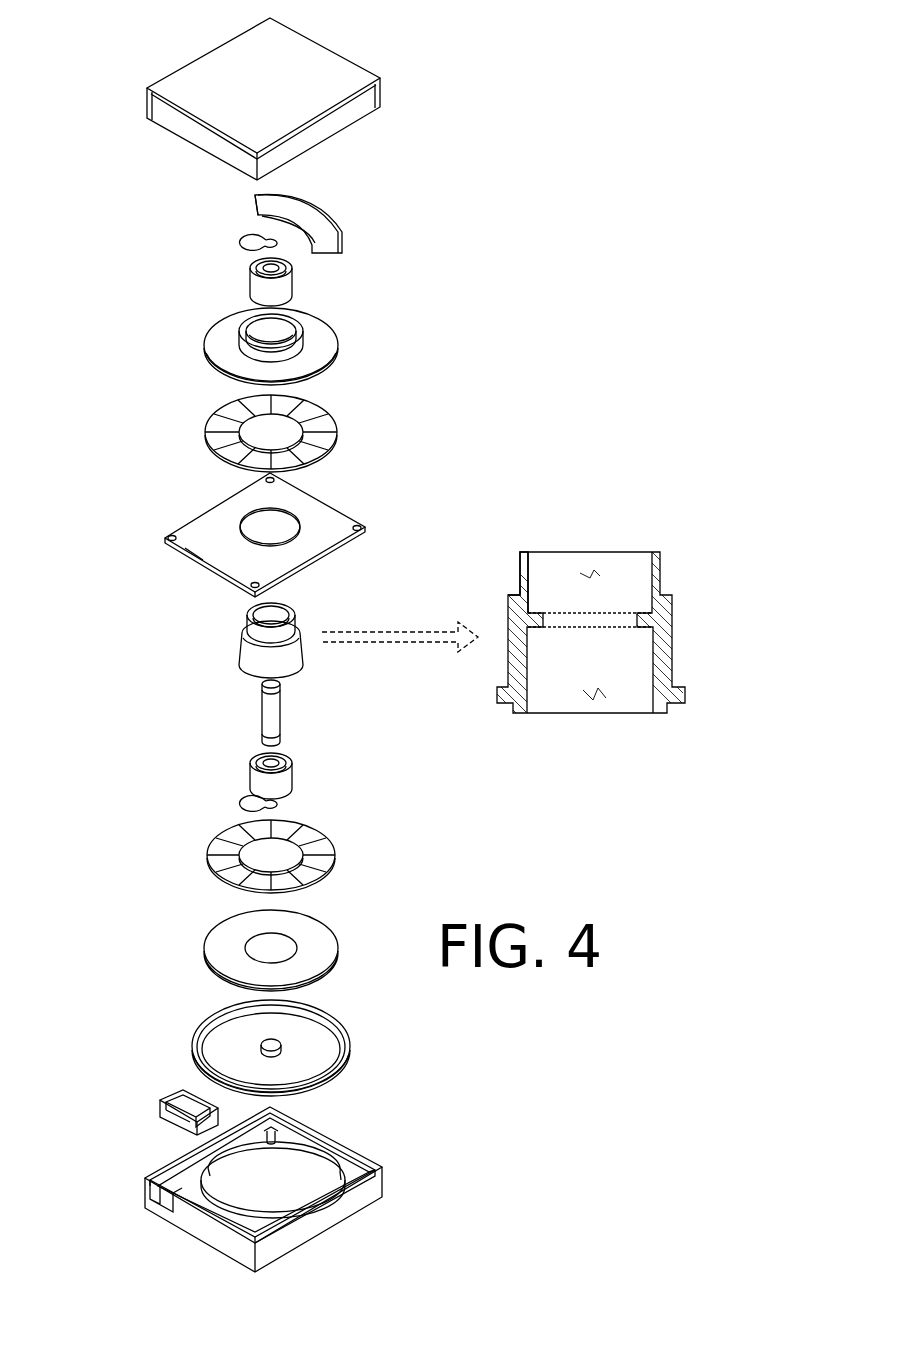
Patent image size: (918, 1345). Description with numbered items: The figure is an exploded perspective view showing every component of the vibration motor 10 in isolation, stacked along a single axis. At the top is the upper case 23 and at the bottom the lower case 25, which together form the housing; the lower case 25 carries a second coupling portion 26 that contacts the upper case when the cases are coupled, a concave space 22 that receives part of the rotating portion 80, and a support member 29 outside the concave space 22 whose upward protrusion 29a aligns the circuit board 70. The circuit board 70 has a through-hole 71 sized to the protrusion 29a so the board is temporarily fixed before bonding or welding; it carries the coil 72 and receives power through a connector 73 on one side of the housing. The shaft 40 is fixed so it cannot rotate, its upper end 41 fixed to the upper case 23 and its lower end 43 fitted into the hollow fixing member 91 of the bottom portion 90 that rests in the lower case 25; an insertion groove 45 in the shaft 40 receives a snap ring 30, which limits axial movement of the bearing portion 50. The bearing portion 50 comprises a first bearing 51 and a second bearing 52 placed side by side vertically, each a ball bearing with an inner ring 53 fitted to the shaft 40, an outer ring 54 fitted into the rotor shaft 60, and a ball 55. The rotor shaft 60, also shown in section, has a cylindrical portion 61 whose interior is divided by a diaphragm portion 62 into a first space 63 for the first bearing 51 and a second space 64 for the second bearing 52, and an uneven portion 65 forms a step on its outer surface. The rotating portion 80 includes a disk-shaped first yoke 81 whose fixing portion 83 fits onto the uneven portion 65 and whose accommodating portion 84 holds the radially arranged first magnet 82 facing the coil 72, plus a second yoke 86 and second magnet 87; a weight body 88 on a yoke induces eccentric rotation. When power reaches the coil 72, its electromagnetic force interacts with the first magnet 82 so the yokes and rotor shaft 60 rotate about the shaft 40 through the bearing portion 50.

The vibration motor 10 is at (118, 38).
The concave space 22 is at (285, 1175).
The upper case 23 is at (345, 70).
The lower case 25 is at (250, 1182).
The second coupling portion 26 is at (374, 1176).
The support member 29 is at (178, 1183).
The protrusion 29a is at (275, 1135).
The snap ring 30 is at (262, 243).
The shaft 40 is at (259, 716).
The upper end 41 is at (280, 688).
The lower end 43 is at (281, 740).
The insertion groove 45 is at (283, 734).
The bearing portion 50 is at (252, 512).
The first bearing 51 is at (252, 281).
The second bearing 52 is at (258, 780).
The inner ring 53 is at (262, 266).
The outer ring 54 is at (258, 290).
The ball 55 is at (286, 268).
The rotor shaft 60 is at (412, 633).
The cylindrical portion 61 is at (515, 650).
The diaphragm portion 62 is at (540, 613).
The first space 63 is at (590, 575).
The second space 64 is at (588, 695).
The uneven portion 65 is at (510, 600).
The circuit board 70 is at (257, 538).
The through-hole 71 is at (158, 553).
The coil 72 is at (330, 513).
The connector 73 is at (163, 1106).
The rotating portion 80 is at (276, 381).
The first yoke 81 is at (337, 337).
The first magnet 82 is at (320, 418).
The fixing portion 83 is at (305, 338).
The accommodating portion 84 is at (325, 350).
The second yoke 86 is at (208, 958).
The second magnet 87 is at (210, 862).
The weight body 88 is at (318, 200).
The bottom portion 90 is at (245, 1048).
The fixing member 91 is at (282, 1044).